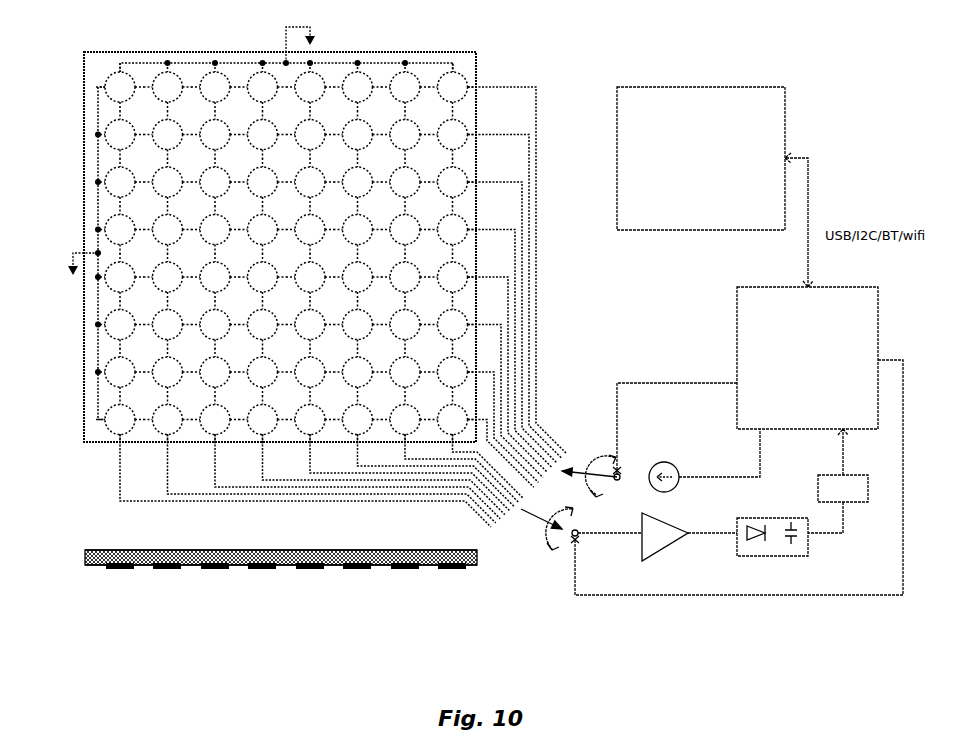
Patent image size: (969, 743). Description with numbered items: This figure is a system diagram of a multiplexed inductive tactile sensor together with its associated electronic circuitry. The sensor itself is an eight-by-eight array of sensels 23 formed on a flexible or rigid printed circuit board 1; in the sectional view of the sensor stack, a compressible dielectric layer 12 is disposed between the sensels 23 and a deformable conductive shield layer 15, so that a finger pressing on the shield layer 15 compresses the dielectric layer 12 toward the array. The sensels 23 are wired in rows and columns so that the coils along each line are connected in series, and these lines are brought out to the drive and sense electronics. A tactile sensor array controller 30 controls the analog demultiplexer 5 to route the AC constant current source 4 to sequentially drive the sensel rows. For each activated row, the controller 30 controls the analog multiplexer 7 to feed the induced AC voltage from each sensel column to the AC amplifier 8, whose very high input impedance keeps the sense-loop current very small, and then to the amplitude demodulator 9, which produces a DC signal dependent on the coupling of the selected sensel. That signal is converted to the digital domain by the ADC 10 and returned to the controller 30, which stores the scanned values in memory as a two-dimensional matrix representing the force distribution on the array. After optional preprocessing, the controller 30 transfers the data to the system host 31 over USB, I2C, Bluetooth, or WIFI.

The printed circuit board 1 is at (440, 566).
The AC constant current source 4 is at (676, 487).
The analog demultiplexer 5 is at (596, 460).
The analog multiplexer 7 is at (563, 550).
The AC amplifier 8 is at (656, 548).
The amplitude demodulator 9 is at (785, 548).
The analog to digital converter 10 is at (852, 504).
The compressible dielectric layer 12 is at (85, 560).
The deformable conductive shield layer 15 is at (83, 382).
The sensel 23 is at (115, 167).
The tactile sensor array controller 30 is at (748, 323).
The system host 31 is at (700, 100).